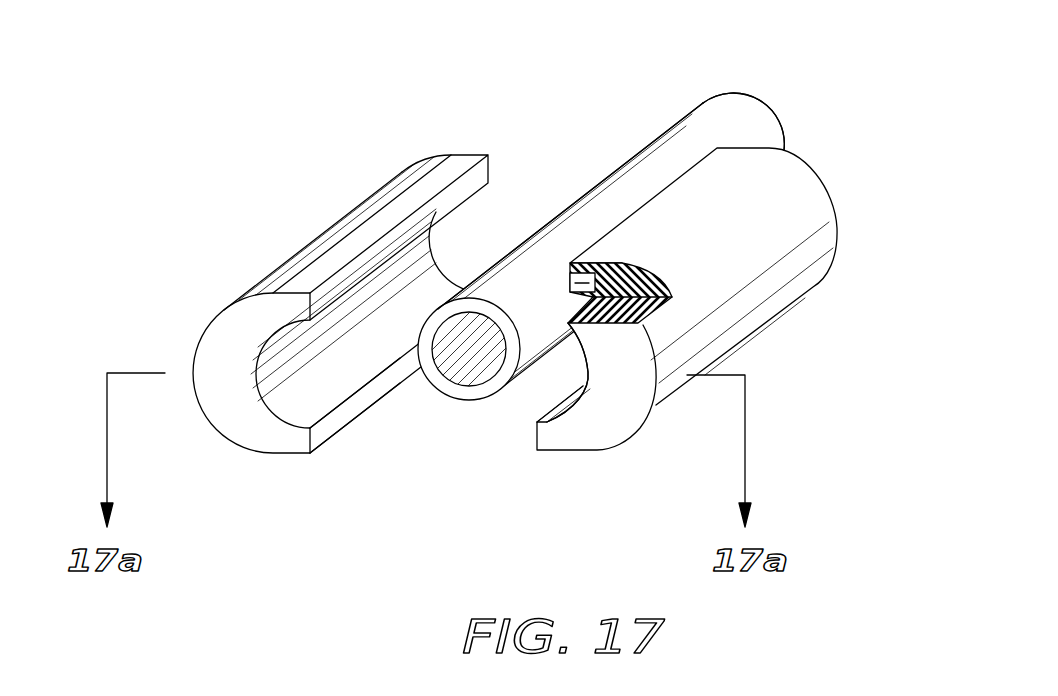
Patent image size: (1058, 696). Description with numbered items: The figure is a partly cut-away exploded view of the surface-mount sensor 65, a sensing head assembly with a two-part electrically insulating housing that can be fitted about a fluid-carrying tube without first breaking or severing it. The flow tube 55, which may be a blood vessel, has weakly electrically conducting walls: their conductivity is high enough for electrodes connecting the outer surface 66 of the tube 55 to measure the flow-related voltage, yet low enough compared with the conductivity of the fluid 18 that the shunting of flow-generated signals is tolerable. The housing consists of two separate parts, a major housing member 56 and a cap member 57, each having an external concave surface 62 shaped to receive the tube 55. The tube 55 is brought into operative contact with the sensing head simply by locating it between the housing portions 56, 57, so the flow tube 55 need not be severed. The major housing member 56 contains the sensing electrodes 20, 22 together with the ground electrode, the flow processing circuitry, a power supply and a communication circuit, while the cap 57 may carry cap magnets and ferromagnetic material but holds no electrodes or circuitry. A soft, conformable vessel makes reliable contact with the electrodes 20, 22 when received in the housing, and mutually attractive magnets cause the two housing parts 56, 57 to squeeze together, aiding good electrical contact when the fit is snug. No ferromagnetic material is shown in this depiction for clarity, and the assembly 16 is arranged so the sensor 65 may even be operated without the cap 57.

The clamp assembly 16 is at (631, 242).
The fluid 18 is at (491, 362).
The sensing electrode 20 is at (570, 281).
The sensing electrode 22 is at (590, 398).
The flow tube 55 is at (607, 180).
The major housing member 56 is at (597, 450).
The cap member 57 is at (263, 438).
The external concave surface 62 is at (317, 393).
The surface-mount sensor 65 is at (447, 543).
The outer surface 66 is at (777, 137).